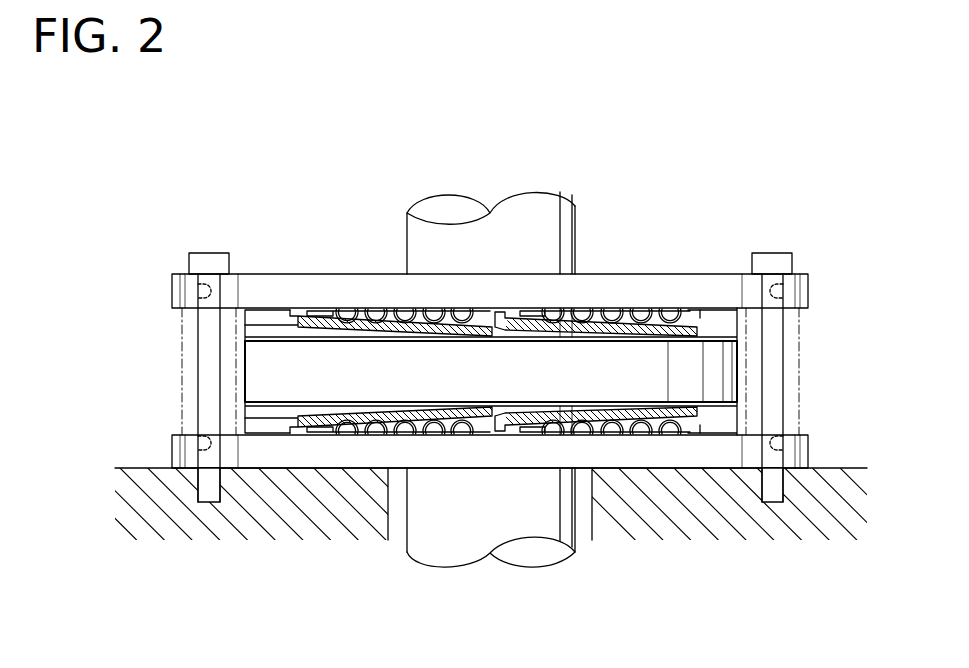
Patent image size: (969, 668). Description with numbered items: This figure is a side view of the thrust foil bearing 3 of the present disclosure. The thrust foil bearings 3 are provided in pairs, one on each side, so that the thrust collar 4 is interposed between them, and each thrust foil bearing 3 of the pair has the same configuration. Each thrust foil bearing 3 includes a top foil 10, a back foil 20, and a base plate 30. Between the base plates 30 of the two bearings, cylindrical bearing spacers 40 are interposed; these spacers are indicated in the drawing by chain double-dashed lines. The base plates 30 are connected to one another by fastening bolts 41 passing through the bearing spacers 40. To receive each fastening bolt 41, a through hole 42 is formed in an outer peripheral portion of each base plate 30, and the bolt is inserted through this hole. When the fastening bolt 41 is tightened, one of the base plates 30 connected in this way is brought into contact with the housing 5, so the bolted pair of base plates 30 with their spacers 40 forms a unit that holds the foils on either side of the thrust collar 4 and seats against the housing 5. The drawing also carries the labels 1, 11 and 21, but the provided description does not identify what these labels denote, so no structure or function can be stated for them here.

The shaft 1 is at (405, 223).
The thrust foil bearing 3 is at (684, 236).
The thrust collar 4 is at (715, 368).
The housing 5 is at (281, 508).
The top foil 10 is at (605, 328).
The second inclined plate 11 is at (382, 327).
The back foil 20 is at (637, 317).
The second rolling elements 21 is at (357, 315).
The base plate 30 is at (710, 290).
The bearing spacer 40 is at (800, 372).
The fastening bolt 41 is at (208, 253).
The through hole 42 is at (198, 296).